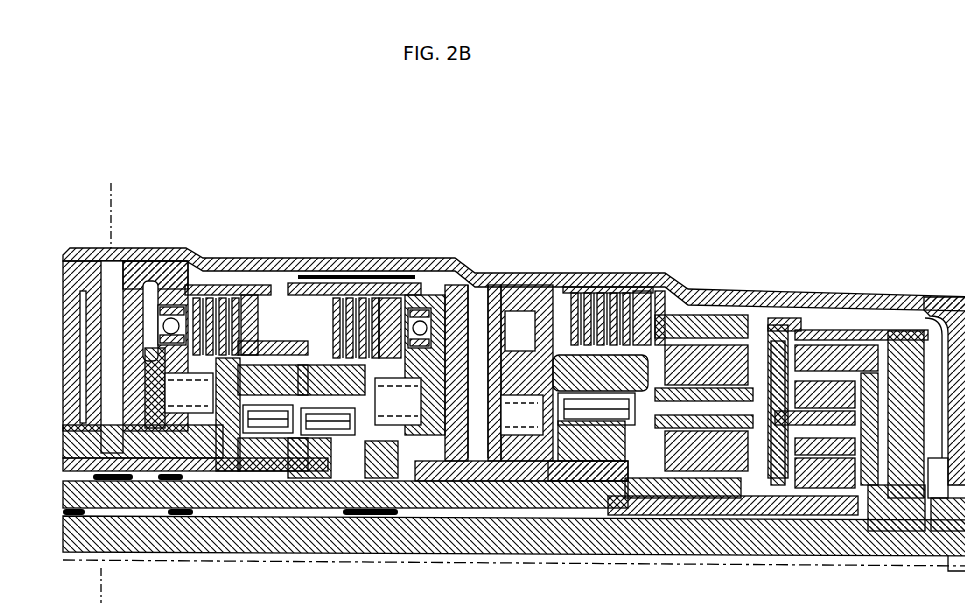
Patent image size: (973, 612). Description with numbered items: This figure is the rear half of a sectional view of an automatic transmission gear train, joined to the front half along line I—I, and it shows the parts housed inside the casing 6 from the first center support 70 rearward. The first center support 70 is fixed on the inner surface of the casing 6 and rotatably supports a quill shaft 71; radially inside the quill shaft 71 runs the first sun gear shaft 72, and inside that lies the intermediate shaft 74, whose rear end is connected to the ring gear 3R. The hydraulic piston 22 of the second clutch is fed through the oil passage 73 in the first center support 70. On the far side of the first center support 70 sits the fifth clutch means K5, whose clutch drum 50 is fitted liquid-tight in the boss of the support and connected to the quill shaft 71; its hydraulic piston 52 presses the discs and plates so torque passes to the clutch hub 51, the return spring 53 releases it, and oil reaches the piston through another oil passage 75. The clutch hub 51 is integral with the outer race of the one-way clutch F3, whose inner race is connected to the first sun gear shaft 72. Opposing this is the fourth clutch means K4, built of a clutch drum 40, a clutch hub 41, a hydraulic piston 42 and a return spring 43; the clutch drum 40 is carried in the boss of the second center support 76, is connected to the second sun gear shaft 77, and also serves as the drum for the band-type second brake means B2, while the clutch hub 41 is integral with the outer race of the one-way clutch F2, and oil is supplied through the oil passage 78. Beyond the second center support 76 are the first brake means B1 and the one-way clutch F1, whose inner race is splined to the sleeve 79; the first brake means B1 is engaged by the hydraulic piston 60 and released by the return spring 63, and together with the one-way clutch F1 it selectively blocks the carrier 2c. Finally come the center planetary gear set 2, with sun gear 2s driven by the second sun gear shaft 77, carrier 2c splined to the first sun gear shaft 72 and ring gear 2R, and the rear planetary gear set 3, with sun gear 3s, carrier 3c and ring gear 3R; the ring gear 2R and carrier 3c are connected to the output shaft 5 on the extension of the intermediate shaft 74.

The casing 6 is at (320, 250).
The hydraulic piston 22 is at (68, 250).
The oil passage 73 is at (110, 257).
The first center support 70 is at (140, 253).
The hydraulic piston 52 is at (179, 290).
The fifth clutch means K5 is at (232, 280).
The clutch drum 50 is at (249, 290).
The clutch hub 51 is at (245, 333).
The clutch hub 41 is at (330, 333).
The one-way clutch F3 is at (253, 503).
The return spring 53 is at (217, 487).
The second brake means B2 is at (388, 270).
The fourth clutch means K4 is at (365, 273).
The clutch drum 40 is at (415, 265).
The return spring 43 is at (363, 473).
The one-way clutch F2 is at (320, 430).
The hydraulic piston 42 is at (415, 463).
The oil passage 78 is at (470, 283).
The second center support 76 is at (500, 278).
The return spring 63 is at (522, 404).
The sleeve 79 is at (503, 460).
The first brake means B1 is at (611, 264).
The hydraulic piston 60 is at (535, 278).
The one-way clutch F1 is at (553, 497).
The second sun gear shaft 77 is at (602, 473).
The ring gear 2R is at (710, 300).
The center planetary gear set 2 is at (672, 301).
The sun gear 2s is at (662, 503).
The carrier 2c is at (747, 463).
The ring gear 3R is at (857, 337).
The carrier 3c is at (770, 317).
The rear planetary gear set 3 is at (838, 330).
The output shaft 5 is at (913, 507).
The sun gear 3s is at (808, 500).
The oil passage 75 is at (133, 447).
The first sun gear shaft 72 is at (143, 497).
The quill shaft 71 is at (182, 480).
The intermediate shaft 74 is at (73, 533).
The line I— I is at (514, 385).